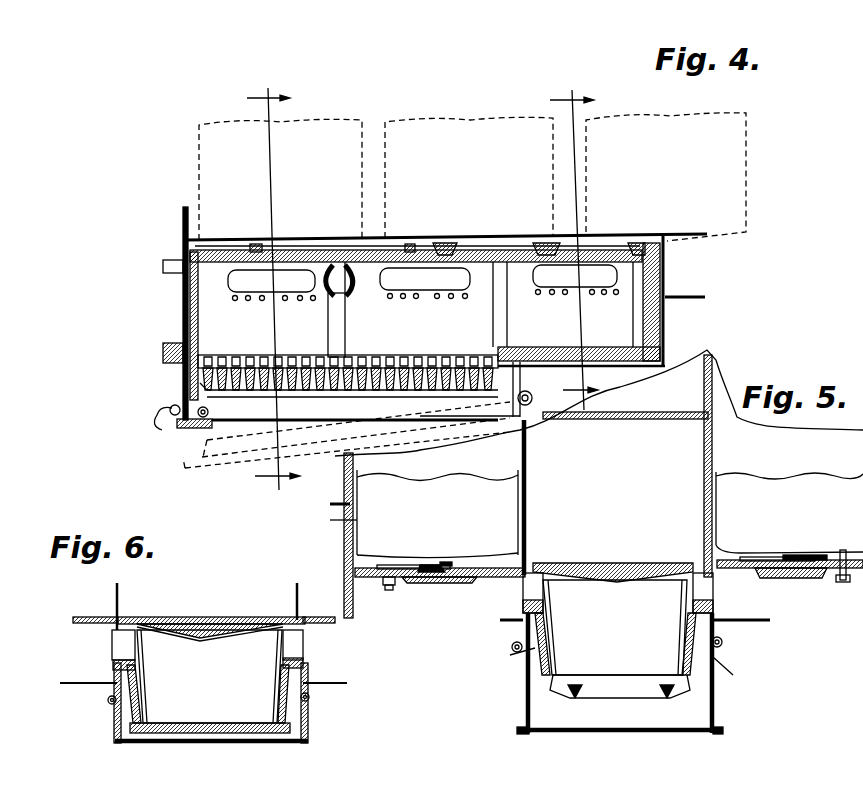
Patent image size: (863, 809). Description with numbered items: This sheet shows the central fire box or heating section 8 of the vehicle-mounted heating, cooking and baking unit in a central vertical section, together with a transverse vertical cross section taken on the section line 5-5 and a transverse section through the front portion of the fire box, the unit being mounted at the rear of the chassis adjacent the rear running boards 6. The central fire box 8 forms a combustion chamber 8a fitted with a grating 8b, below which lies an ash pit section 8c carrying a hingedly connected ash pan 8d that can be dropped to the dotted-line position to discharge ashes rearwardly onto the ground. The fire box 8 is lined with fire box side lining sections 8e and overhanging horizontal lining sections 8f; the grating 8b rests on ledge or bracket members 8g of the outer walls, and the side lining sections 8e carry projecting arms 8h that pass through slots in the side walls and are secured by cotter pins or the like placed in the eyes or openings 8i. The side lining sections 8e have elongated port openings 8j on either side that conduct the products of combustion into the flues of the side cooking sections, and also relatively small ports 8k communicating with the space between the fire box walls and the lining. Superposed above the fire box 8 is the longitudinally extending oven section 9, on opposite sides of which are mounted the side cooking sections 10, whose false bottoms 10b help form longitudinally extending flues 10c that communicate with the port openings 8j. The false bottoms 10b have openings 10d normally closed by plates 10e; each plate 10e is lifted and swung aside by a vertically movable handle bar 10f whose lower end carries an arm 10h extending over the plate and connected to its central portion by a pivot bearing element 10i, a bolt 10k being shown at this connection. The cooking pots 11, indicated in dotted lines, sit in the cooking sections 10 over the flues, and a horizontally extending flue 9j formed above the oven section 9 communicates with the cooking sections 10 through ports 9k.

In FIG. 4, the section line 5- 5 is at (273, 283).
In FIG. 4, the rear running boards 6 is at (577, 240).
In FIG. 5, the central fire box 8 is at (717, 651).
In FIG. 6, the central fire box 8 is at (310, 697).
In FIG. 4, the combustion chamber 8a is at (426, 304).
In FIG. 5, the combustion chamber 8a is at (615, 627).
In FIG. 6, the combustion chamber 8a is at (209, 676).
In FIG. 4, the grating 8b is at (398, 366).
In FIG. 5, the grating 8b is at (620, 684).
In FIG. 4, the ash pit section 8c is at (207, 396).
In FIG. 5, the ash pit section 8c is at (620, 700).
In FIG. 4, the ash pan 8d is at (250, 425).
In FIG. 5, the ash pan 8d is at (618, 733).
In FIG. 4, the fire box side lining sections 8e is at (200, 318).
In FIG. 5, the fire box side lining sections 8e is at (697, 625).
In FIG. 6, the fire box side lining sections 8e is at (285, 688).
In FIG. 4, the horizontal lining sections 8f is at (392, 256).
In FIG. 5, the horizontal lining sections 8f is at (603, 566).
In FIG. 6, the horizontal lining sections 8f is at (222, 622).
In FIG. 5, the ledge or bracket members 8g is at (545, 690).
In FIG. 5, the projecting arms 8h is at (622, 668).
In FIG. 6, the projecting arms 8h is at (123, 702).
In FIG. 5, the eyes or openings 8i is at (723, 642).
In FIG. 6, the eyes or openings 8i is at (107, 700).
In FIG. 4, the elongated port openings 8j is at (497, 328).
In FIG. 5, the elongated port openings 8j is at (540, 596).
In FIG. 6, the elongated port openings 8j is at (112, 650).
In FIG. 4, the small ports 8k is at (262, 301).
In FIG. 5, the small ports 8k is at (545, 612).
In FIG. 6, the small ports 8k is at (133, 675).
In FIG. 4, the oven section 9 is at (190, 223).
In FIG. 5, the oven section 9 is at (727, 452).
In FIG. 6, the oven section 9 is at (207, 595).
In FIG. 5, the horizontally extending flue 9j is at (662, 388).
In FIG. 5, the ports 9k is at (712, 383).
In FIG. 5, the side cooking sections 10 is at (348, 488).
In FIG. 5, the false bottoms 10b is at (492, 565).
In FIG. 6, the false bottoms 10b is at (108, 619).
In FIG. 5, the longitudinally extending flues 10c is at (614, 590).
In FIG. 5, the openings 10d is at (403, 565).
In FIG. 5, the plates 10e is at (462, 574).
In FIG. 5, the vertically movable handle bars 10f is at (347, 560).
In FIG. 5, the arms 10h is at (418, 565).
In FIG. 5, the pivot bearing elements 10i is at (443, 565).
In FIG. 5, the bolt 10k is at (827, 560).
In FIG. 4, the cooking pots 11 is at (200, 160).
In FIG. 5, the cooking pots 11 is at (335, 522).